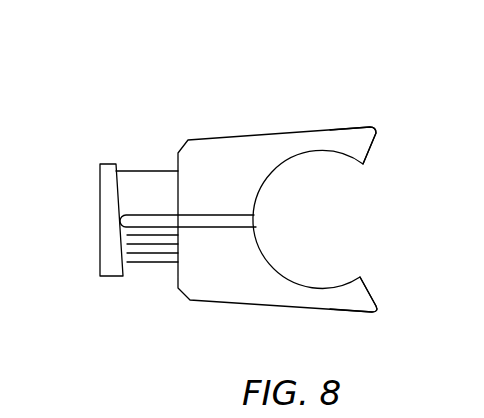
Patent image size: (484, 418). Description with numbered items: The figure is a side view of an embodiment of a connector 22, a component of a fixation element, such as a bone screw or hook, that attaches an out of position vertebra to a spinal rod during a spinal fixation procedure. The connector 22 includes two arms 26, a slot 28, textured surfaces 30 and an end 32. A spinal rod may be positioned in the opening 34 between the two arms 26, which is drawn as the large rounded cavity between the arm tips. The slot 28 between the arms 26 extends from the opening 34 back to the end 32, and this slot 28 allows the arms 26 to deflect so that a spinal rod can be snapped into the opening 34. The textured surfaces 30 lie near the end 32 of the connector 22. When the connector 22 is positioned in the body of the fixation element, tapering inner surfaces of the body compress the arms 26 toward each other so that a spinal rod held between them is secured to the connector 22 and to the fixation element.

The connector 22 is at (220, 80).
The arms 26 is at (327, 138).
The slot 28 is at (247, 219).
The textured surfaces 30 is at (157, 254).
The end 32 is at (113, 234).
The opening 34 is at (332, 266).